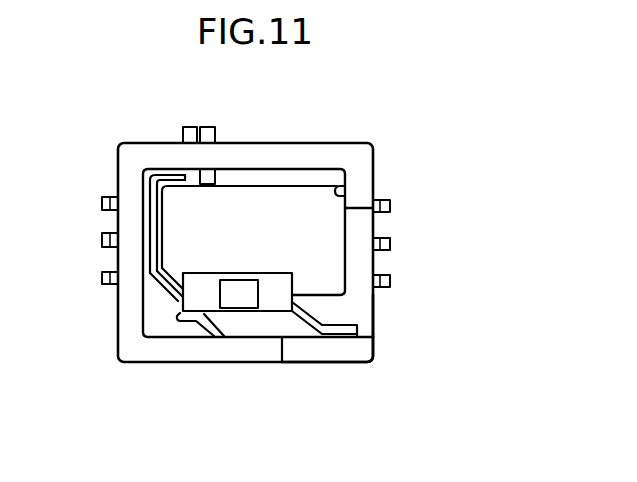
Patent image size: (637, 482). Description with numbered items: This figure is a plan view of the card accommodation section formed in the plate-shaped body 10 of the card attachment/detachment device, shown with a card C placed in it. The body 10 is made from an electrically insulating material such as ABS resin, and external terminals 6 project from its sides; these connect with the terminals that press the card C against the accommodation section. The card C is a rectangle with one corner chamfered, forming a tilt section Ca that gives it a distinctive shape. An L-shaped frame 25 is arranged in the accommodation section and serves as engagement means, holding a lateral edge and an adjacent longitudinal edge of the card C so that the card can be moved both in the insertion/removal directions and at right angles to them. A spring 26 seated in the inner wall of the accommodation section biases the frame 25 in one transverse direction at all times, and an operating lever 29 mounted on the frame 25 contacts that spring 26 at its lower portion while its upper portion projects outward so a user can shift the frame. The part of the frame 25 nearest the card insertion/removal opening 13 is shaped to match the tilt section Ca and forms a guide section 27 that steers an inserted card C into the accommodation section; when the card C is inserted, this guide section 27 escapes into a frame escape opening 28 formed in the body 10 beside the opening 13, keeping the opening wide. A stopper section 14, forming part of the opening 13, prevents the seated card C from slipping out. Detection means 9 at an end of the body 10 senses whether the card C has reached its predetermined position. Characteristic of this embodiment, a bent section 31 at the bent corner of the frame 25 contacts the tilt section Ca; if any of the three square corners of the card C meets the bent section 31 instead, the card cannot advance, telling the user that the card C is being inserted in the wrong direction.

The body 10 is at (373, 143).
The card C is at (287, 205).
The frame 25 is at (165, 172).
The tilt section Ca is at (160, 283).
The detection means 9 is at (207, 128).
The stopper section 14 is at (347, 188).
The external terminals 6 is at (100, 242).
The spring 26 is at (203, 313).
The operating lever 29 is at (242, 297).
The guide section 27 is at (325, 325).
The bent section 31 is at (183, 303).
The frame escape opening 28 is at (346, 352).
The card insertion/removal opening 13 is at (362, 317).